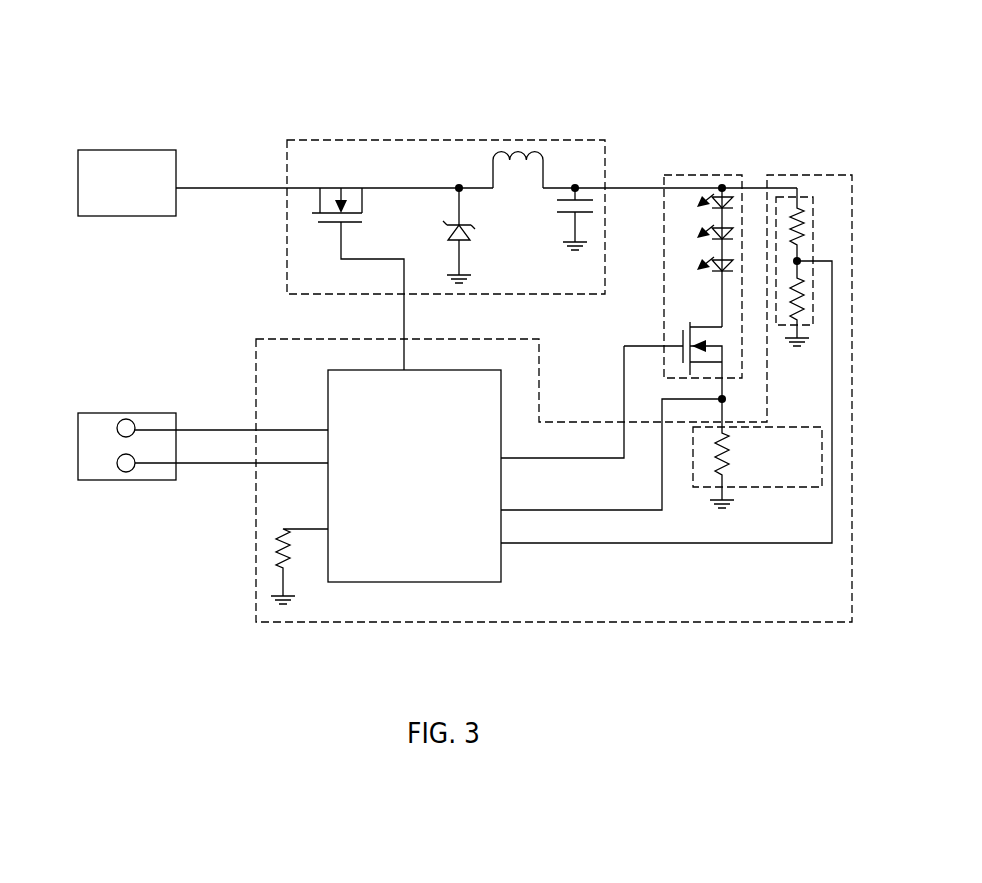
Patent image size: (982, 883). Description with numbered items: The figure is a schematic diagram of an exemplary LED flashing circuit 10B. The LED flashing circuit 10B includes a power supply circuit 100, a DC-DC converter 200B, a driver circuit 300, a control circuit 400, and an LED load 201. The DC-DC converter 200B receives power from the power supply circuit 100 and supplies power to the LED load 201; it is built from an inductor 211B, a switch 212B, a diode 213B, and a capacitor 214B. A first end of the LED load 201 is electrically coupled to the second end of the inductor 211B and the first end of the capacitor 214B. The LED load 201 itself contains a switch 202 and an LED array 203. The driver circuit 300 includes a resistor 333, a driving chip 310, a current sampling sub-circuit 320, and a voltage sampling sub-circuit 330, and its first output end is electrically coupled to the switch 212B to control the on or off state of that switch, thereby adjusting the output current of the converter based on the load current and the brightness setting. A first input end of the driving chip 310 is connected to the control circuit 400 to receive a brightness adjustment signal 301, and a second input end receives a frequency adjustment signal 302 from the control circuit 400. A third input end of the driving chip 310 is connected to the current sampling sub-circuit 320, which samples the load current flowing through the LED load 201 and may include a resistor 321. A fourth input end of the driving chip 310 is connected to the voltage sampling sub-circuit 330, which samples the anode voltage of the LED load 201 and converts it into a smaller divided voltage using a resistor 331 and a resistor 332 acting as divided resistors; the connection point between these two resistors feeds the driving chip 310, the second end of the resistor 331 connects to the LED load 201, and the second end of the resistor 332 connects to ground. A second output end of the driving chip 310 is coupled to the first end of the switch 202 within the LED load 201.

The LED flashing circuit 10B is at (88, 40).
The power supply circuit 100 is at (78, 178).
The DC-DC converter 200B is at (287, 270).
The inductor 211B is at (518, 155).
The switch 212B is at (333, 190).
The diode 213B is at (427, 235).
The capacitor 214B is at (553, 210).
The LED load 201 is at (693, 175).
The switch 202 is at (692, 350).
The LED array 203 is at (712, 250).
The driver circuit 300 is at (256, 352).
The driving chip 310 is at (345, 370).
The current sampling sub-circuit 320 is at (793, 427).
The resistor 321 is at (728, 452).
The voltage sampling sub-circuit 330 is at (815, 245).
The resistor 331 is at (810, 228).
The resistor 332 is at (800, 300).
The resistor 333 is at (276, 540).
The control circuit 400 is at (78, 437).
The brightness adjustment signal 301 is at (126, 419).
The frequency adjustment signal 302 is at (126, 472).